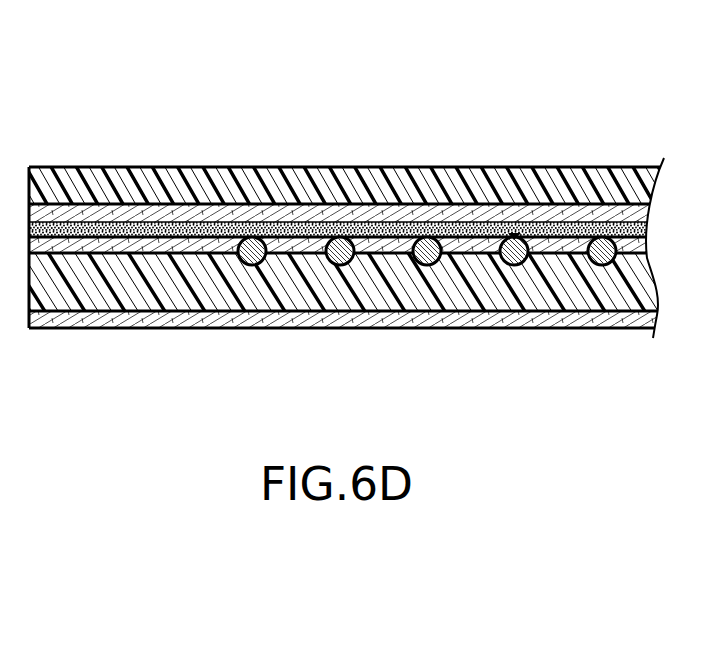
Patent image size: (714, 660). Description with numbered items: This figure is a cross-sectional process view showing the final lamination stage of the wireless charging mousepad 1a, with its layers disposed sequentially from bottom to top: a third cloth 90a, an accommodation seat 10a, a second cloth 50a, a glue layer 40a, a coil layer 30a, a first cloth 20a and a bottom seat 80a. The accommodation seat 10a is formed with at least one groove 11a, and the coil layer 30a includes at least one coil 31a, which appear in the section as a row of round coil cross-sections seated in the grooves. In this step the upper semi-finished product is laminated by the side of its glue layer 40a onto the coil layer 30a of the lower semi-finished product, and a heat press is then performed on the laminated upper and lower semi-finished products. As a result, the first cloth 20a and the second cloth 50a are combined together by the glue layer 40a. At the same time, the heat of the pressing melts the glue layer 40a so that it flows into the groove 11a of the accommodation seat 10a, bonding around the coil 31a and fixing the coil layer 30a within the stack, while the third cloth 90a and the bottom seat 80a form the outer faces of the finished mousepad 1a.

The wireless charging mousepad 1a is at (356, 214).
The accommodation seat 10a is at (315, 290).
The groove 11a is at (508, 258).
The first cloth 20a is at (173, 245).
The coil layer 30a is at (427, 250).
The coil 31a is at (502, 250).
The glue layer 40a is at (388, 228).
The second cloth 50a is at (293, 213).
The bottom seat 80a is at (225, 183).
The third cloth 90a is at (419, 317).